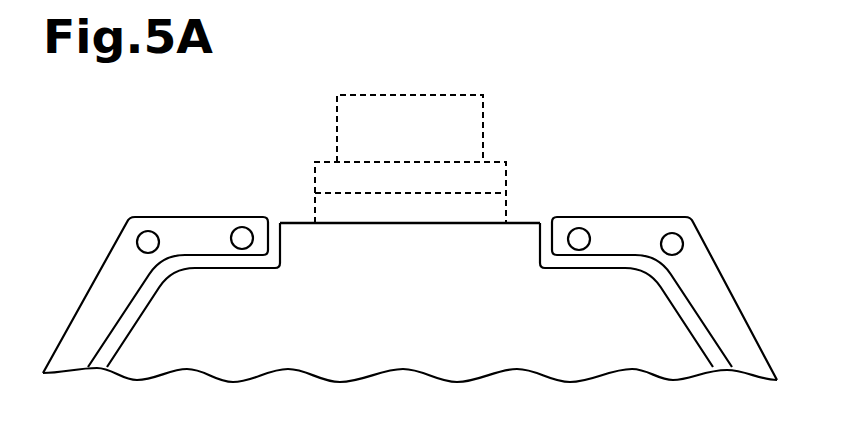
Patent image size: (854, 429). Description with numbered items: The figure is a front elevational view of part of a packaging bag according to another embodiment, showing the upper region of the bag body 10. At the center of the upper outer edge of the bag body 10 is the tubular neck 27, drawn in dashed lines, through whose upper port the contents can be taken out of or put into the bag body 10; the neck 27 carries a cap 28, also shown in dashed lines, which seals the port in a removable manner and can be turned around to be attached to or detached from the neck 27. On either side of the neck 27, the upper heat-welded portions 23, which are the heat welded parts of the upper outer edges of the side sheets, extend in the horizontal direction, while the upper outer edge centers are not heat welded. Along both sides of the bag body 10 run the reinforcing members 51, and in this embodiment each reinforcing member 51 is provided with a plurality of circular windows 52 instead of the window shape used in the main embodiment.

The bag body 10 is at (393, 335).
The upper heat-welded portion 23 is at (211, 262).
The neck 27 is at (506, 180).
The cap 28 is at (483, 128).
The reinforcing member 51 is at (82, 306).
The circular window 52 is at (234, 238).